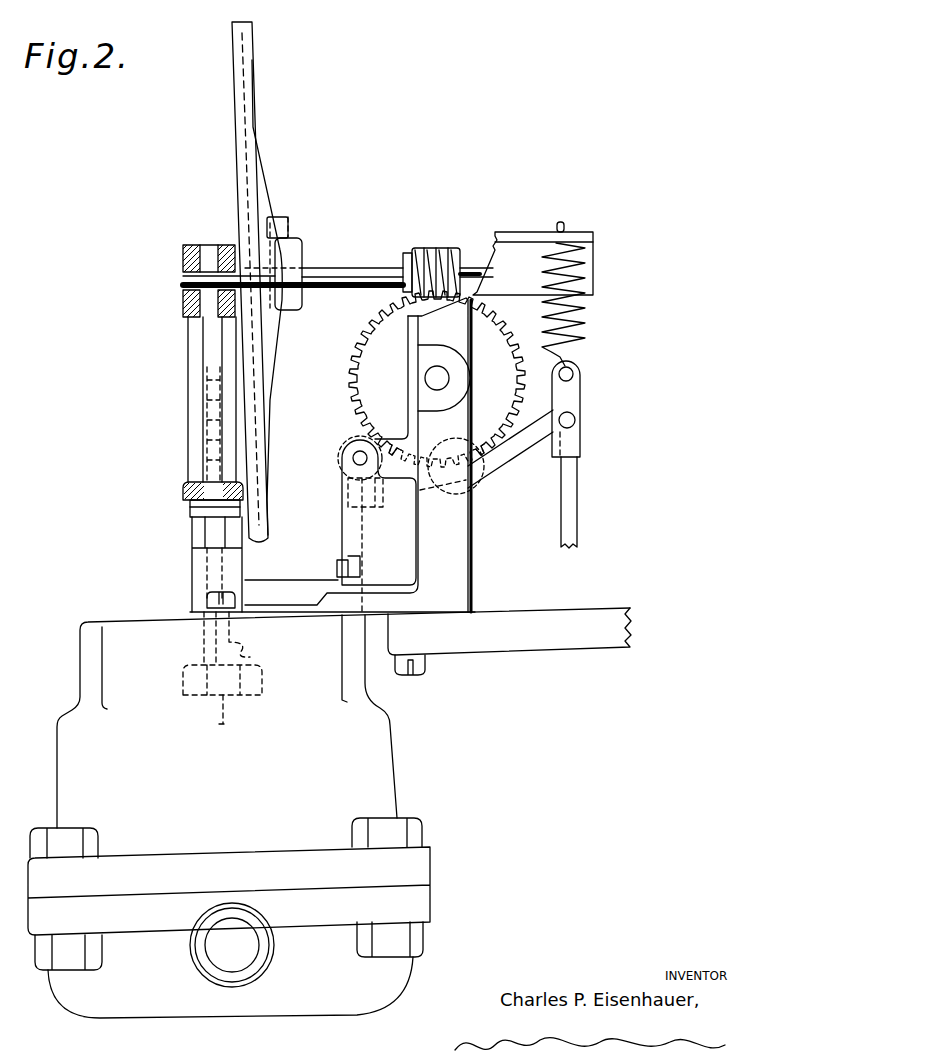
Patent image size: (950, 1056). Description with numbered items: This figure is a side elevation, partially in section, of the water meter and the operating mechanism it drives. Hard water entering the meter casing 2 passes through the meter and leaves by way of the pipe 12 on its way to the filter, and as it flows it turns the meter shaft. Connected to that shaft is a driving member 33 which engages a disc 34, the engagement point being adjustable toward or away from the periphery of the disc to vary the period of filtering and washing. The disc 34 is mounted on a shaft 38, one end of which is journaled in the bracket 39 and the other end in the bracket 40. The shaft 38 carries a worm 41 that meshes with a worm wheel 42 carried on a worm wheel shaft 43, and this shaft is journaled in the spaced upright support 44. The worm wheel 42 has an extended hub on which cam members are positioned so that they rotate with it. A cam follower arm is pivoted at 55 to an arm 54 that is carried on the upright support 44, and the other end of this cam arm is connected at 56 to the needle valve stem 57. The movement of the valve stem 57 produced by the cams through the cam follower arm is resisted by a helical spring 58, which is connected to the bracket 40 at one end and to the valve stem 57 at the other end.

The meter casing 2 is at (362, 767).
The pipe 12 is at (200, 968).
The driving member 33 is at (185, 492).
The disc 34 is at (233, 143).
The shaft 38 is at (335, 272).
The bracket 39 is at (183, 283).
The bracket 40 is at (595, 255).
The worm 41 is at (447, 253).
The worm wheel 42 is at (366, 327).
The worm wheel shaft 43 is at (449, 378).
The upright support 44 is at (455, 575).
The arm 54 is at (397, 466).
The pivot 55 is at (353, 458).
The connection point 56 is at (576, 418).
The needle valve stem 57 is at (577, 445).
The helical spring 58 is at (585, 310).